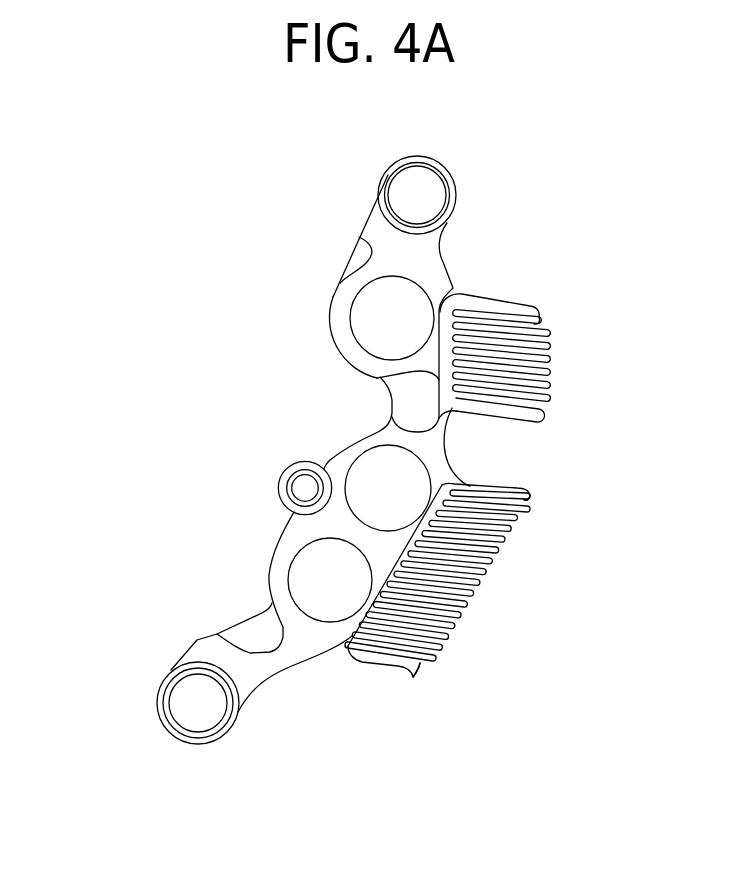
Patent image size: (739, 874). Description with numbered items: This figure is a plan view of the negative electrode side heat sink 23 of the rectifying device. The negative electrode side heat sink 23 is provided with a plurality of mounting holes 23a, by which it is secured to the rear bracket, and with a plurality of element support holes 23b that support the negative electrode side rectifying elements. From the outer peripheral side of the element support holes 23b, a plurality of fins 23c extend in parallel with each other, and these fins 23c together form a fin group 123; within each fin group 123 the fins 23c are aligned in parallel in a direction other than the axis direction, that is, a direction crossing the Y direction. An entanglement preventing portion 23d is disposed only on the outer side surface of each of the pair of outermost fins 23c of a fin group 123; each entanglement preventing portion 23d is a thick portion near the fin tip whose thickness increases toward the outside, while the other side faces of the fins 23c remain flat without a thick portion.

The negative electrode side heat sink 23 is at (264, 290).
The mounting holes 23a is at (403, 188).
The element support holes 23b is at (370, 320).
The fins 23c is at (545, 336).
The entanglement preventing portion 23d is at (533, 312).
The fin group 123 is at (523, 527).